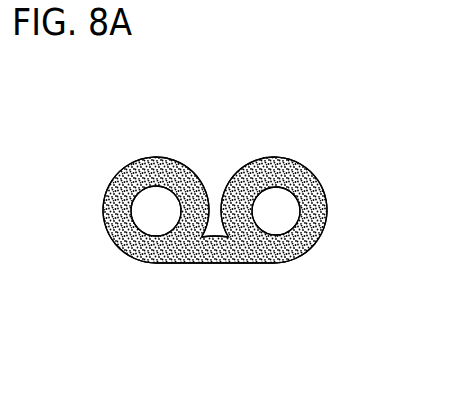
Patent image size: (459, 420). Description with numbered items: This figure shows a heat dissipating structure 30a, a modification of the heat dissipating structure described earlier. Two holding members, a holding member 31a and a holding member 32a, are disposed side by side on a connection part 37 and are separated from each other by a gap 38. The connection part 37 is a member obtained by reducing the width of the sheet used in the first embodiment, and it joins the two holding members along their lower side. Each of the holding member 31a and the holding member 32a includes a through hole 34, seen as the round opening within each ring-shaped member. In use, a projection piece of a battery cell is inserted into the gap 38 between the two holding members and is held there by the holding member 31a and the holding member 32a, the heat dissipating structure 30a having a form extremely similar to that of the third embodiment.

The heat dissipating structure 30a is at (297, 146).
The holding member 31a is at (156, 219).
The holding member 32a is at (275, 220).
The through hole 34 is at (118, 253).
The connection part 37 is at (205, 265).
The gap 38 is at (217, 177).